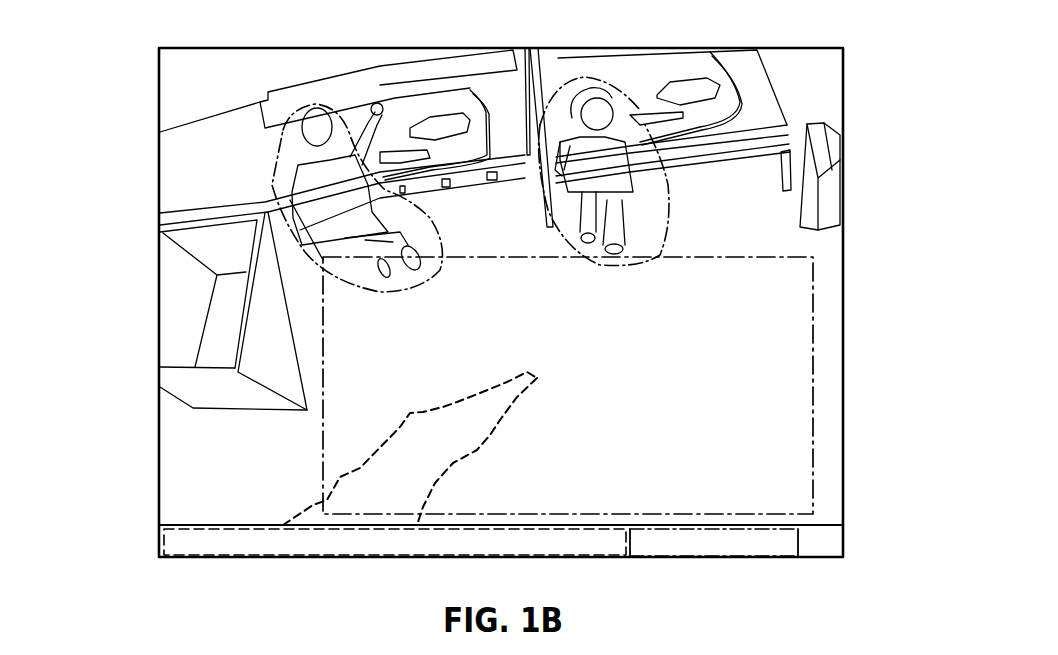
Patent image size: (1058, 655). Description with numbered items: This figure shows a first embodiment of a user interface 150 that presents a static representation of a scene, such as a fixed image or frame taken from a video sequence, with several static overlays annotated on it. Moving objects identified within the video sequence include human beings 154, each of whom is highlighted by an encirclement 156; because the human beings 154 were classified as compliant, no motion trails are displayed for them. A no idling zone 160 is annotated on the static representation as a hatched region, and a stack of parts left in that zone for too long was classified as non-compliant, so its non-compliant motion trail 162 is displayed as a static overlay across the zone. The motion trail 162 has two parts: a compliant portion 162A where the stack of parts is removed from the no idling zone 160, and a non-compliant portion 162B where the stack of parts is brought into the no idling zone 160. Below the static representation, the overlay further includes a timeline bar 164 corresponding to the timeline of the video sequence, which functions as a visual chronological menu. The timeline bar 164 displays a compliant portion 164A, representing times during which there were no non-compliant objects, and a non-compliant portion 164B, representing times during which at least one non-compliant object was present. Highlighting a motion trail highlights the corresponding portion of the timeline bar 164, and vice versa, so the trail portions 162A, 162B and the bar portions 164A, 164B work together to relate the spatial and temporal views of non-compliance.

The user interface 150 is at (150, 17).
The human beings 154 is at (323, 128).
The encirclement 156 is at (272, 168).
The no idling zone 160 is at (323, 430).
The non-compliant motion trail 162 is at (406, 419).
The compliant portion of the motion trail 162A is at (490, 437).
The non-compliant portion of the motion trail 162B is at (456, 405).
The timeline bar 164 is at (442, 538).
The compliant portion of the timeline bar 164A is at (703, 544).
The non-compliant portion of the timeline bar 164B is at (268, 542).